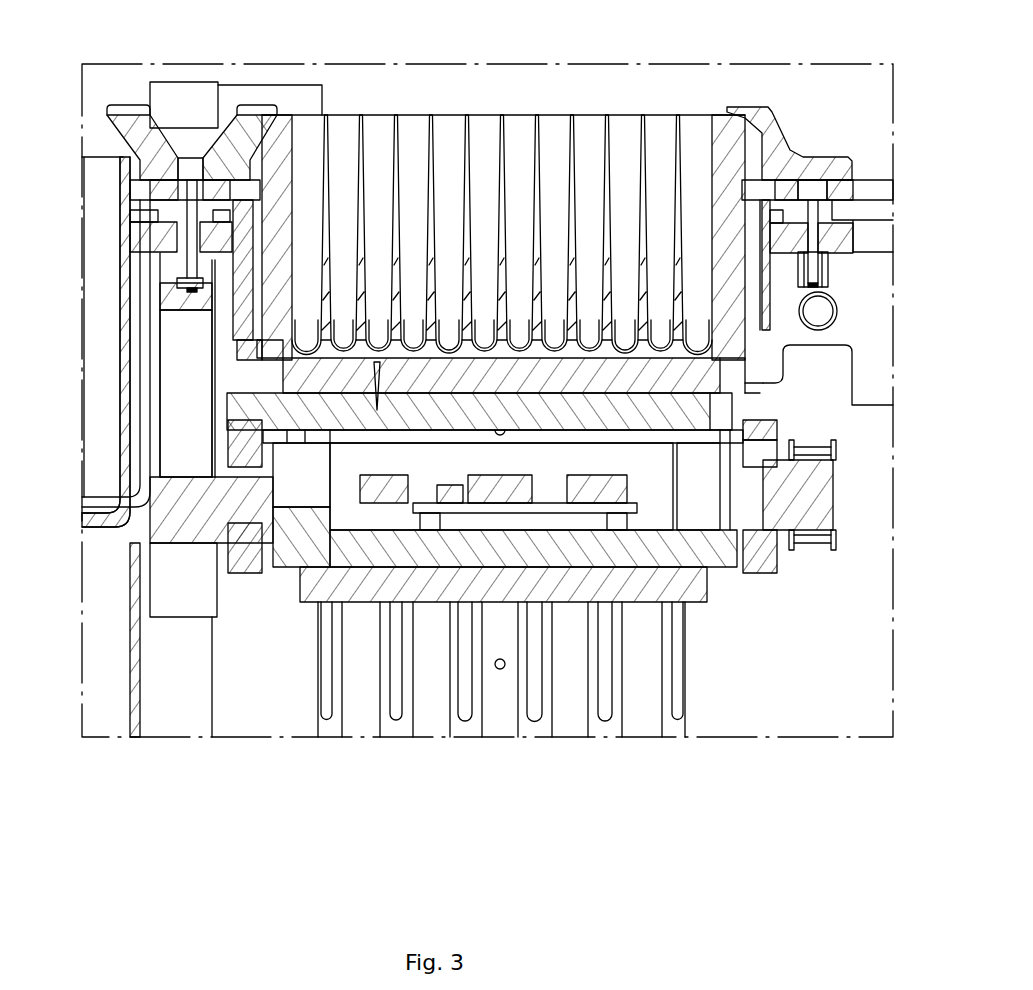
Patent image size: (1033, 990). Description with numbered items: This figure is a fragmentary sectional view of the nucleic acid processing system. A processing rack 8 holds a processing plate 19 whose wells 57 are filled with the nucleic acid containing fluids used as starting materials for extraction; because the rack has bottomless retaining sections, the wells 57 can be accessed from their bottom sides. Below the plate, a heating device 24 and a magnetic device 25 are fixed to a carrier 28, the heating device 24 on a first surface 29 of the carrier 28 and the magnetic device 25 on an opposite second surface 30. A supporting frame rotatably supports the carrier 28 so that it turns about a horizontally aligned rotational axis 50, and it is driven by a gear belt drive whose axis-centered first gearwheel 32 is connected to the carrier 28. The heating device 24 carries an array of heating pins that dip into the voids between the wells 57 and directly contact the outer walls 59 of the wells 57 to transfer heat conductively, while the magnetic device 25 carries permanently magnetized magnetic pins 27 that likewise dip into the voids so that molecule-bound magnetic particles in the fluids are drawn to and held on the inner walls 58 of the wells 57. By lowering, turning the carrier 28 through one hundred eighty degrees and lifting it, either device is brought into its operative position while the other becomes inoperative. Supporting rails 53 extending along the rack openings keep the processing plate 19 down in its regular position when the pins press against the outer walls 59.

The processing rack 8 is at (240, 296).
The processing plate 19 is at (283, 130).
The heating device 24 is at (313, 372).
The magnetic device 25 is at (306, 603).
The magnetic pins 27 is at (325, 716).
The carrier 28 is at (270, 404).
The first surface 29 is at (283, 397).
The second surface 30 is at (364, 580).
The first gearwheel 32 is at (815, 548).
The rotational axis 50 is at (805, 497).
The supporting rails 53 is at (248, 106).
The wells 57 is at (556, 130).
The inner walls 58 is at (402, 130).
The outer walls 59 is at (730, 388).